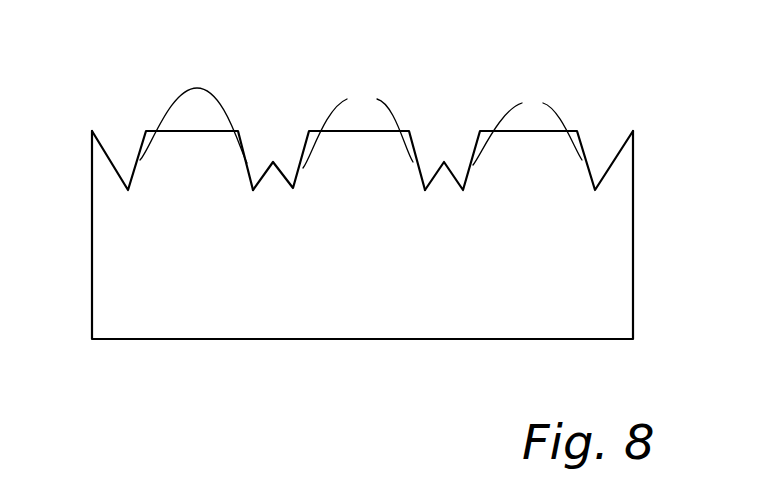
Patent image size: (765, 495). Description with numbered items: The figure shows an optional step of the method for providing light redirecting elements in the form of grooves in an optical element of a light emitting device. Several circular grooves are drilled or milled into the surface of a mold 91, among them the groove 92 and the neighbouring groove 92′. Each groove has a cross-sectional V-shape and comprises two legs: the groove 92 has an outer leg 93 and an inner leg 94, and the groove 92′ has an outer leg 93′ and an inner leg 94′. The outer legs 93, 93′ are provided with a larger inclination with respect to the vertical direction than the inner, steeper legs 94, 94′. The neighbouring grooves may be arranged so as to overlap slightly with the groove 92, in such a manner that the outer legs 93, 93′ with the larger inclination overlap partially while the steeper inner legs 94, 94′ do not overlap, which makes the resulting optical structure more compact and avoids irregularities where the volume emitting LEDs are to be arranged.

The mold 91 is at (333, 317).
The groove 92 is at (287, 157).
The groove 92′ is at (120, 148).
The outer leg 93 is at (284, 178).
The outer leg 93′ is at (114, 168).
The inner leg 94 is at (358, 119).
The inner leg 94′ is at (193, 110).